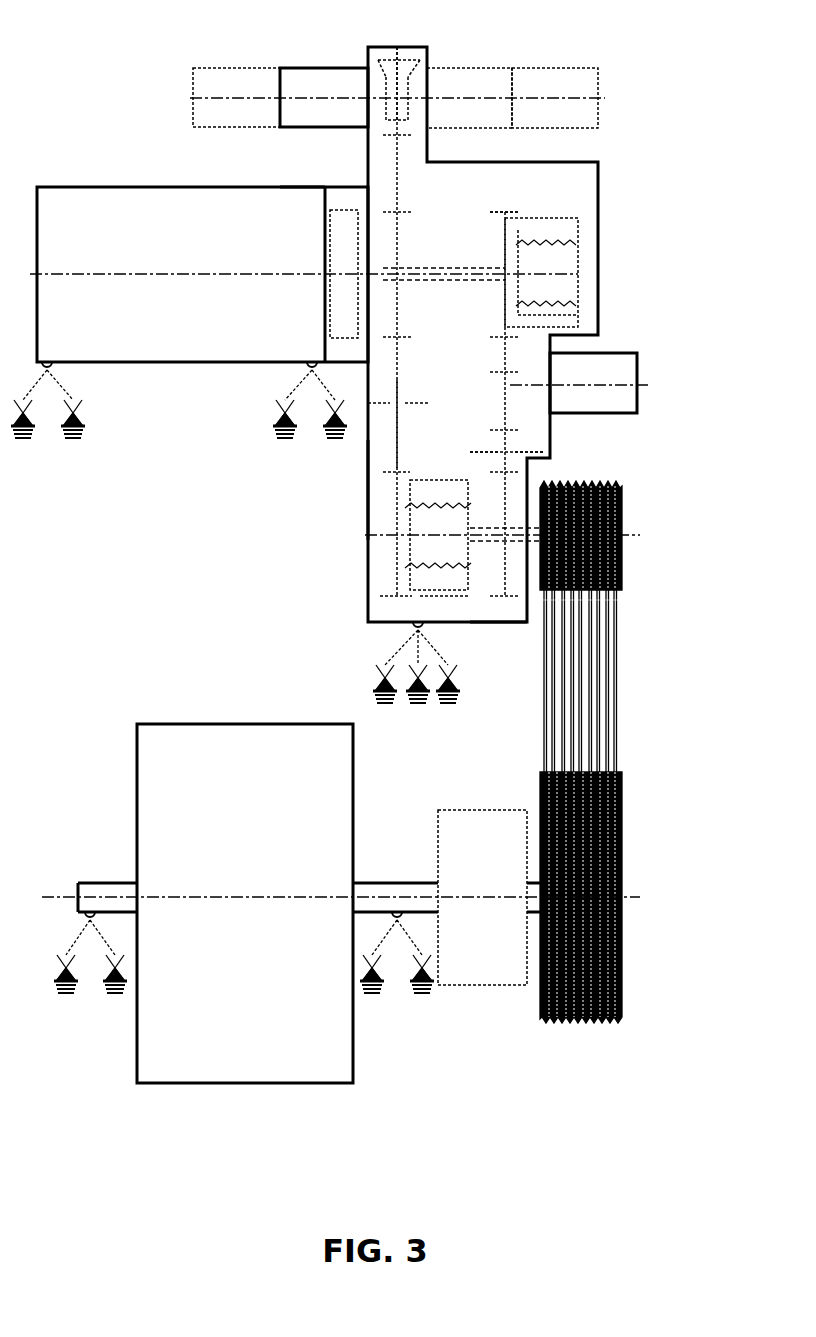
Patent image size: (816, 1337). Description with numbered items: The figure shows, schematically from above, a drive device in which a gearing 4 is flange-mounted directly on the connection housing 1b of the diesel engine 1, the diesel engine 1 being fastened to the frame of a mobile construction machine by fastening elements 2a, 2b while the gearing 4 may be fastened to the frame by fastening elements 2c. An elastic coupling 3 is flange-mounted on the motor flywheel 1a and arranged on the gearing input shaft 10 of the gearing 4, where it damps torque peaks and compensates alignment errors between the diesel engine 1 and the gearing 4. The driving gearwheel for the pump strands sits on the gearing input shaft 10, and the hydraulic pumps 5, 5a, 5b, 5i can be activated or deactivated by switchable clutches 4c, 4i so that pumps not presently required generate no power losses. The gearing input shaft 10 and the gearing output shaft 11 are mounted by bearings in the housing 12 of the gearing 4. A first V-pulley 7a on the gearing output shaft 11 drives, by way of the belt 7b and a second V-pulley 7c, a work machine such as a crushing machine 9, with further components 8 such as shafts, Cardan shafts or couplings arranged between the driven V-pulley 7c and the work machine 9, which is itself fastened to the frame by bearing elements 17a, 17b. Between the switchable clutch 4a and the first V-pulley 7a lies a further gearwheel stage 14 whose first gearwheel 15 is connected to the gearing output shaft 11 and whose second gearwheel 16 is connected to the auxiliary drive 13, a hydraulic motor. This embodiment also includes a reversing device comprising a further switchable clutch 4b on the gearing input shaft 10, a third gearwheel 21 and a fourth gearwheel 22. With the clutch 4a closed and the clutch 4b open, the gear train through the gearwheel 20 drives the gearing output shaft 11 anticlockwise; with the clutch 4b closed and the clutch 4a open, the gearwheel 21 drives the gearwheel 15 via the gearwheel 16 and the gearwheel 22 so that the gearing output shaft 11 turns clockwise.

The main drive means/diesel engine 1 is at (304, 274).
The motor flywheel 1a is at (312, 215).
The connection housing 1b is at (340, 190).
The fastening element 2a is at (48, 417).
The fastening element 2b is at (310, 417).
The fastening element 2c is at (416, 678).
The elastic coupling 3 is at (344, 274).
The gearing 4 is at (483, 334).
The switchable clutch 4a is at (438, 535).
The switchable clutch 4b is at (541, 272).
The switchable clutch 4c is at (378, 52).
The switchable clutch 4i is at (419, 52).
The hydraulic pump 5 is at (397, 97).
The hydraulic pump 5a is at (236, 97).
The hydraulic pump 5b is at (469, 98).
The hydraulic pump 5i is at (555, 98).
The V-pulley 7a is at (640, 500).
The belt 7b is at (597, 740).
The V-pulley 7c is at (623, 833).
The further components 8 is at (446, 897).
The work machine 9 is at (341, 903).
The gearing input shaft 10 is at (437, 283).
The gearing output shaft 11 is at (617, 590).
The housing 12 is at (367, 493).
The auxiliary drive/hydraulic motor 13 is at (607, 372).
The gearwheel stage 14 is at (505, 622).
The first gearwheel 15 is at (510, 497).
The second gearwheel 16 is at (507, 370).
The bearing element 17a is at (95, 952).
The bearing element 17b is at (397, 967).
The gearwheel 20 is at (395, 423).
The third gearwheel 21 is at (505, 212).
The fourth gearwheel 22 is at (512, 443).